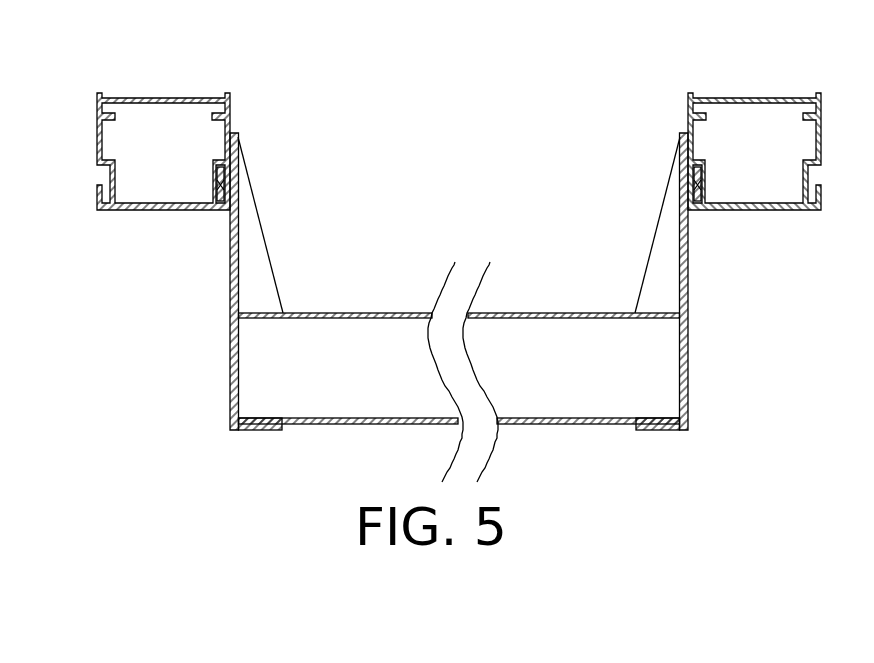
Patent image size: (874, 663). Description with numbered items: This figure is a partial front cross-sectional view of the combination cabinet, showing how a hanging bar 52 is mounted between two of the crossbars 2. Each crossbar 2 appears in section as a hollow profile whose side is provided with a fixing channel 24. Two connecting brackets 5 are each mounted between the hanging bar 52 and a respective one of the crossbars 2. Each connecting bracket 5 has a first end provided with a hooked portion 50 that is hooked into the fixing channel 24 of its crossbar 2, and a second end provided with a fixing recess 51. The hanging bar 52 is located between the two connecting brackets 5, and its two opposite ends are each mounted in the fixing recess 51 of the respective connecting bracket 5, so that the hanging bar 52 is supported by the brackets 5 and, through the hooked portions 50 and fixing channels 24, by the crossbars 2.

The crossbar 2 is at (168, 110).
The fixing channel 24 is at (222, 170).
The connecting bracket 5 is at (453, 296).
The hooked portion 50 is at (222, 192).
The fixing recess 51 is at (248, 300).
The hanging bar 52 is at (348, 340).